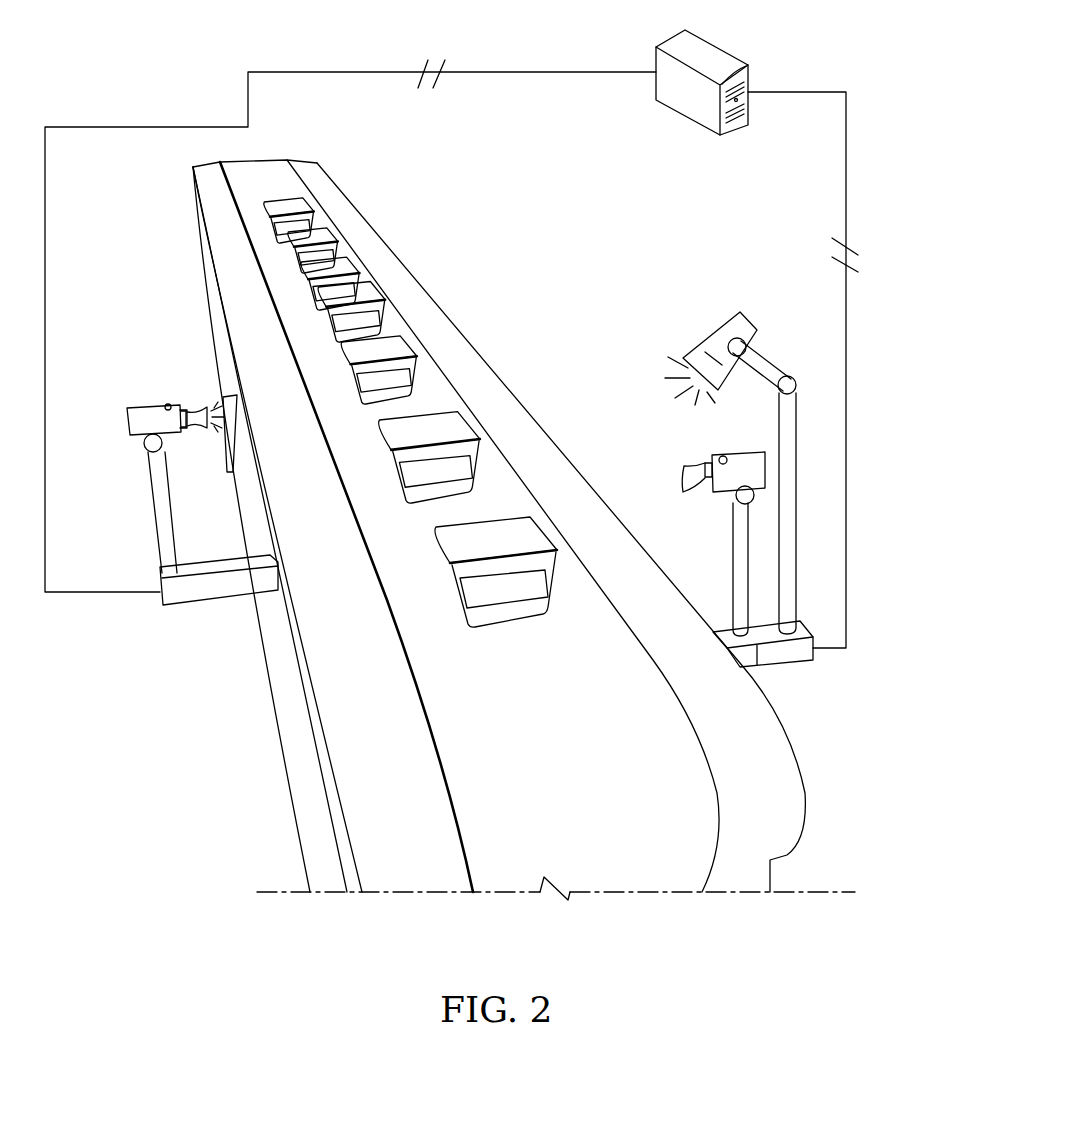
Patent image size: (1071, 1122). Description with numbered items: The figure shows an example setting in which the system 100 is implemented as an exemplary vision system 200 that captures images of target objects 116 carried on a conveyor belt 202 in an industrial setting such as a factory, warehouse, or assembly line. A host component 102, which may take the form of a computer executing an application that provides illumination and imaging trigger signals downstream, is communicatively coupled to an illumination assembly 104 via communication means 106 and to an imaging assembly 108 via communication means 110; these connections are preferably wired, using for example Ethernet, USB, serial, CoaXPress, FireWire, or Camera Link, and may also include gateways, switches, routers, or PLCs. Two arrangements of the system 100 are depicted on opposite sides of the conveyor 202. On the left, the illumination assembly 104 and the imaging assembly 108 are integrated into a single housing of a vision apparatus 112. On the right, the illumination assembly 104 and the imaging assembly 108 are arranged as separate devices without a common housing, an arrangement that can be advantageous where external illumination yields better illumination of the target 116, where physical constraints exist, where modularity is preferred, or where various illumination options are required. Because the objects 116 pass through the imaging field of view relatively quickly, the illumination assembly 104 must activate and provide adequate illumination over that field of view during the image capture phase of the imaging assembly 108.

The vision system 200 is at (199, 55).
The conveyor belt 202 is at (570, 620).
The target objects 116 is at (455, 425).
The communication means 106 is at (550, 72).
The communication means 110 is at (848, 448).
The host component 102 is at (727, 47).
The system 100 is at (699, 287).
The illumination assembly 104 is at (757, 316).
The imaging assembly 108 is at (118, 388).
The vision apparatus 112 is at (150, 407).